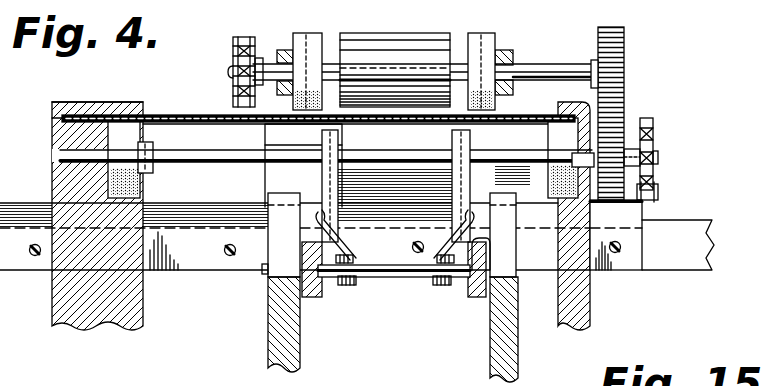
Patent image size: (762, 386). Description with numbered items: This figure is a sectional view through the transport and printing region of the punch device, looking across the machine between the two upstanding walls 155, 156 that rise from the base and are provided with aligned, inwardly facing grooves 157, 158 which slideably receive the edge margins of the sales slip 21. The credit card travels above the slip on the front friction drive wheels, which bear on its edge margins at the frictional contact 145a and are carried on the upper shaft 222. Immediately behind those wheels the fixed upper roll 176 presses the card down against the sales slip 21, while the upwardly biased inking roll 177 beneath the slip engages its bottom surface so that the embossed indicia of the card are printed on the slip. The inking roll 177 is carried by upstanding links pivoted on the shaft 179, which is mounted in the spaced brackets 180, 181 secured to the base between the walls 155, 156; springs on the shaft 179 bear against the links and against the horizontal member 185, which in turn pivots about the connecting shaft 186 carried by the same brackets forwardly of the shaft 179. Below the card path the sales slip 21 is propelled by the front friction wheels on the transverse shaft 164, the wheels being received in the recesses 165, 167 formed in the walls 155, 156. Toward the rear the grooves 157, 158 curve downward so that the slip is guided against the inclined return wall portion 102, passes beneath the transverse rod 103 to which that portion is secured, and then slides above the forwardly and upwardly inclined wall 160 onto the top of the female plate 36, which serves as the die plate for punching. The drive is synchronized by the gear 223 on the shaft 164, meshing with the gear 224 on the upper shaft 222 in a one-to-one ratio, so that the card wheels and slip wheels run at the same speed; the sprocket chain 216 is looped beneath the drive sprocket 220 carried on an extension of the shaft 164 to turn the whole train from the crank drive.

The sales slip 21 is at (180, 115).
The female plate 36 is at (708, 243).
The return wall portion 102 is at (265, 172).
The transversely extending rod 103 is at (197, 222).
The frictional contact 145a is at (290, 107).
The upstanding wall 155 is at (55, 102).
The upstanding wall 156 is at (590, 304).
The guide groove 157 is at (95, 120).
The guide groove 158 is at (558, 112).
The inclined wall 160 is at (630, 216).
The transverse shaft 164 is at (217, 162).
The recess 165 is at (143, 198).
The recess 167 is at (556, 238).
The upper roll 176 is at (392, 42).
The inking roll 177 is at (340, 130).
The shaft 179 is at (371, 283).
The bracket 180 is at (298, 353).
The bracket 181 is at (490, 373).
The horizontal member 185 is at (476, 297).
The connecting shaft 186 is at (393, 272).
The sprocket chain 216 is at (658, 193).
The drive sprocket 220 is at (653, 125).
The upper shaft 222 is at (535, 68).
The gear 223 is at (658, 158).
The gear 224 is at (623, 28).